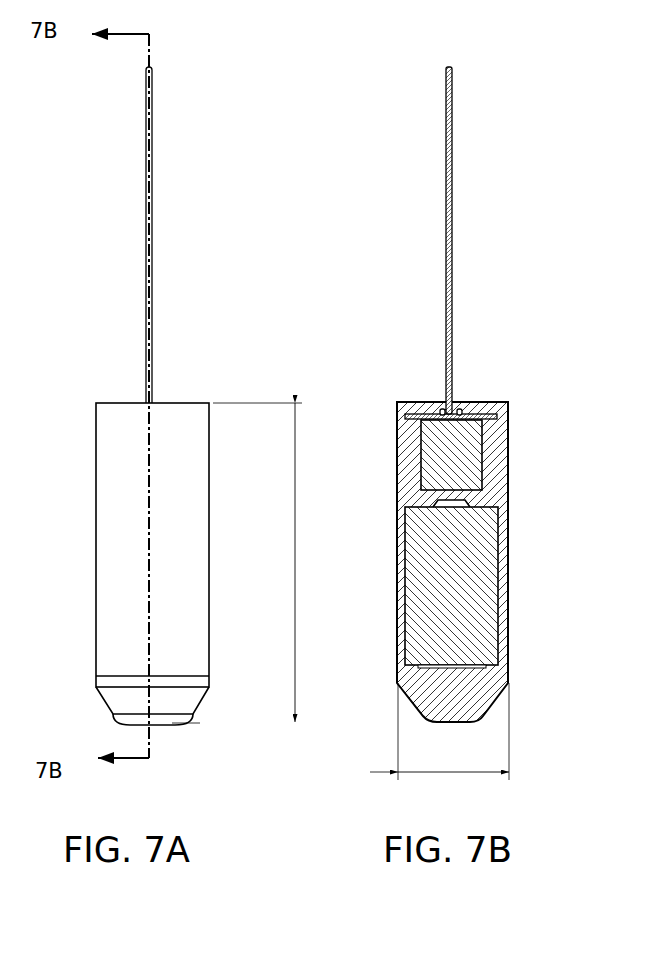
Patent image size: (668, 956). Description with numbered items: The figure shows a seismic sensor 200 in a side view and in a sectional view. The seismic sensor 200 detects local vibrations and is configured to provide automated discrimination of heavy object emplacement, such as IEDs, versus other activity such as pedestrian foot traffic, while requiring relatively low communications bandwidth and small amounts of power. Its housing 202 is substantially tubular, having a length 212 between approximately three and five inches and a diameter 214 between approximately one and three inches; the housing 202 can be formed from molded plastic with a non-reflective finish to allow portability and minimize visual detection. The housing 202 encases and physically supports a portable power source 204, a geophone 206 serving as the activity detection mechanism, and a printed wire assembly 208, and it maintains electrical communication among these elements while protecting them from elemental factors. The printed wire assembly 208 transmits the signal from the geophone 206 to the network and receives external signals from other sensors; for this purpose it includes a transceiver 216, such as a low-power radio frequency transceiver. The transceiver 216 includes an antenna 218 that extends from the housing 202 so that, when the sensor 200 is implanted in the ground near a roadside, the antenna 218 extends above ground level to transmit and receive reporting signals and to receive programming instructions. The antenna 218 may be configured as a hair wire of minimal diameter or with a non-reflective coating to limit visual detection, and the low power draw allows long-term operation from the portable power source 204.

In FIG. 7A, the seismic sensor 200 is at (178, 107).
In FIG. 7B, the seismic sensor 200 is at (496, 105).
In FIG. 7B, the housing 202 is at (509, 497).
In FIG. 7B, the portable power source 204 is at (501, 612).
In FIG. 7B, the geophone 206 is at (485, 449).
In FIG. 7B, the printed wire assembly 208 is at (475, 412).
In FIG. 7A, the length 212 is at (295, 478).
In FIG. 7B, the diameter 214 is at (470, 768).
In FIG. 7B, the transceiver 216 is at (442, 411).
In FIG. 7B, the antenna 218 is at (454, 229).